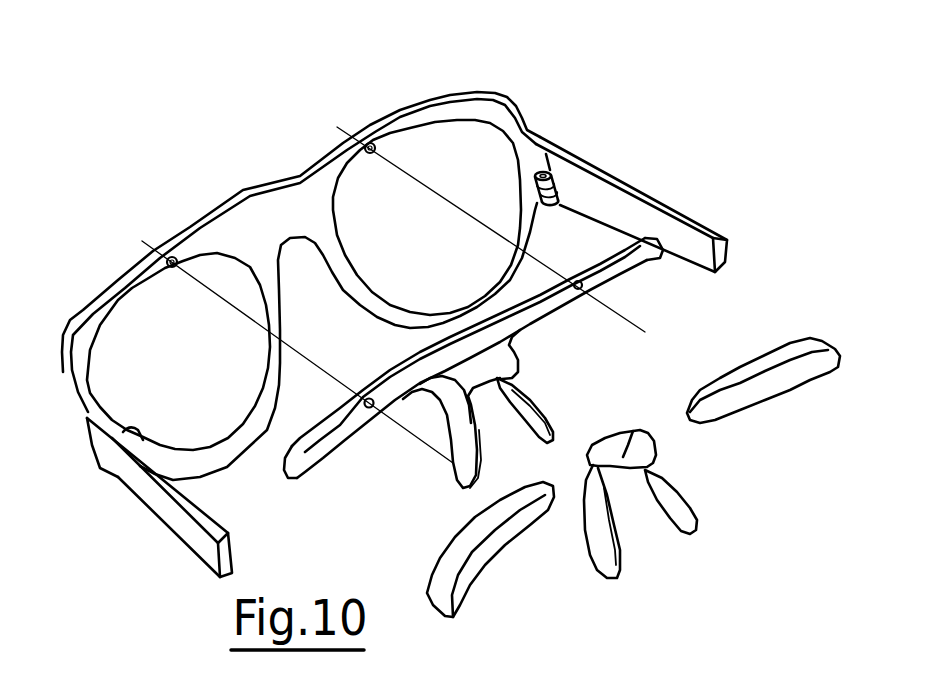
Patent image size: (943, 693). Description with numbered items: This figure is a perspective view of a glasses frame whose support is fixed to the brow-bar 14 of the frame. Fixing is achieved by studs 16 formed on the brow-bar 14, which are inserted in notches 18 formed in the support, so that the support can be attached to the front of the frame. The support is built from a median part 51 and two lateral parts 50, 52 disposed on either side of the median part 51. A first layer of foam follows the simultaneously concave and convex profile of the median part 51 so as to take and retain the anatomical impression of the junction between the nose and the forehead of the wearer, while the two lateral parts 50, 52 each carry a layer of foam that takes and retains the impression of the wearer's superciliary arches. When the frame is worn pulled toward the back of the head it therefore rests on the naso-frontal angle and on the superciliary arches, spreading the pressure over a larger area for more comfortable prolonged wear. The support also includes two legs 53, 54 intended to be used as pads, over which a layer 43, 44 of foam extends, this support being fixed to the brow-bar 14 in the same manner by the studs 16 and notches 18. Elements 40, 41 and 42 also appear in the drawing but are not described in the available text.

The brow-bar 14 is at (247, 230).
The studs 16 is at (170, 255).
The notches 18 is at (368, 397).
The nose pad support 40 is at (622, 455).
The left nose pad 41 is at (485, 562).
The right nose pad 42 is at (778, 380).
The layer of foam 43 is at (600, 568).
The layer of foam 44 is at (677, 513).
The lateral part 50 is at (503, 358).
The median part 51 is at (310, 448).
The lateral part 52 is at (637, 257).
The leg 53 is at (467, 473).
The leg 54 is at (533, 425).